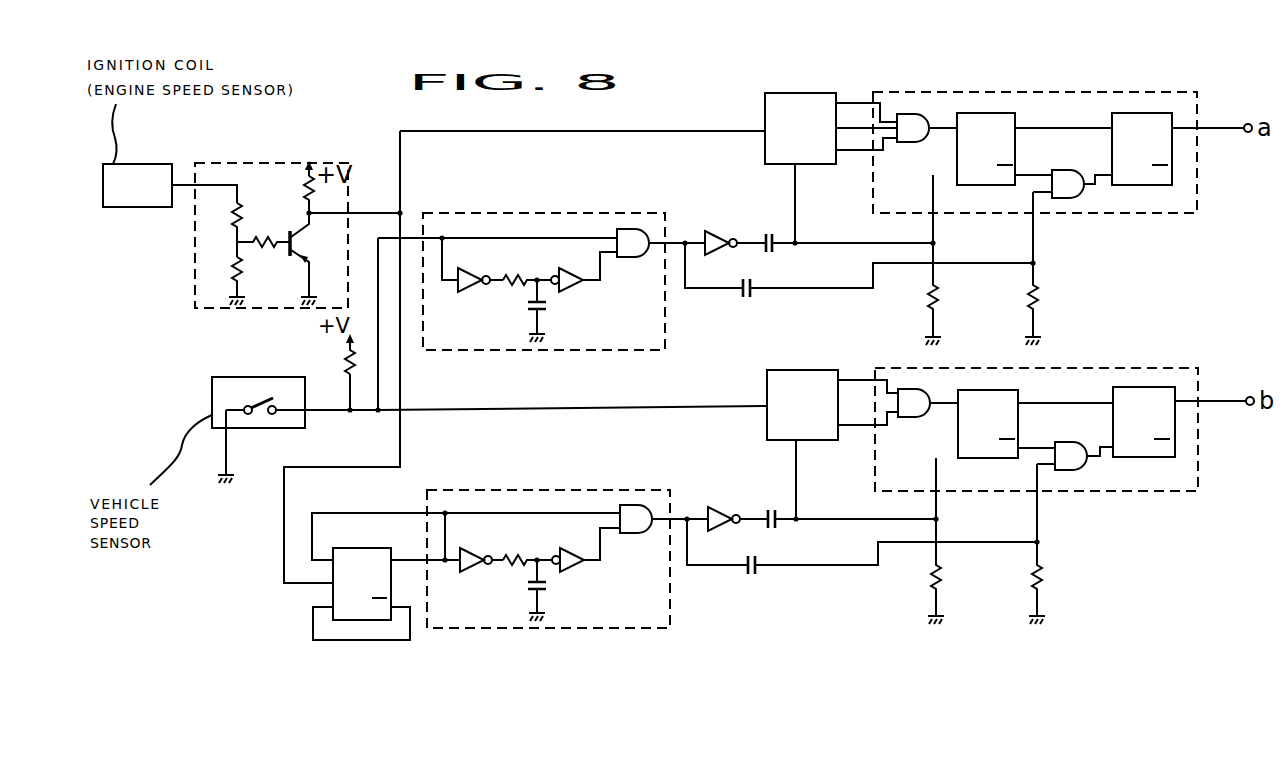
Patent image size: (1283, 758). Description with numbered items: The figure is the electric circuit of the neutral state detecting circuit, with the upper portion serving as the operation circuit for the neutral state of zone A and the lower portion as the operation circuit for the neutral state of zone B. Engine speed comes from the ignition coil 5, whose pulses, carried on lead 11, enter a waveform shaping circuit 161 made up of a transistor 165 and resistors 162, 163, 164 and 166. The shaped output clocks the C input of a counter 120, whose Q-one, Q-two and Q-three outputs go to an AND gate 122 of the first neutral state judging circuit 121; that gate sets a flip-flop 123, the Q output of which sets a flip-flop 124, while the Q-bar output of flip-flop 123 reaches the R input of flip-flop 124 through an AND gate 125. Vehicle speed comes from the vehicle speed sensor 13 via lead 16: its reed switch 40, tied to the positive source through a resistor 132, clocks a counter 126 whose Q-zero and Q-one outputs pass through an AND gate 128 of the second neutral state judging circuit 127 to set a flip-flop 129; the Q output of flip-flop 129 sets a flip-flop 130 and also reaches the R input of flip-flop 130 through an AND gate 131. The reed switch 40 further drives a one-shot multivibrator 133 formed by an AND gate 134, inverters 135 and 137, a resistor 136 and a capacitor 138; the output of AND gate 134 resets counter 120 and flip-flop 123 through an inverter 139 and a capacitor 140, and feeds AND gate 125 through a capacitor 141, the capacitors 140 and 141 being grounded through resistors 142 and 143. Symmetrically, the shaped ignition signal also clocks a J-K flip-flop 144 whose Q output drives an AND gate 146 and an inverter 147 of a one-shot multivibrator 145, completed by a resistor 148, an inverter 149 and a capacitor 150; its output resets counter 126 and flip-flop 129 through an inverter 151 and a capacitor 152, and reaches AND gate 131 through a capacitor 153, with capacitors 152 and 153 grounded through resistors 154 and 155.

The ignition coil 5 is at (145, 164).
The lead 11 is at (225, 188).
The vehicle speed sensor 13 is at (237, 357).
The lead 16 is at (318, 412).
The reed switch 40 is at (261, 433).
The counter 120 is at (816, 75).
The first neutral state judging circuit 121 is at (1001, 77).
The AND gate 122 is at (924, 143).
The flip-flop 123 is at (996, 112).
The flip-flop 124 is at (1121, 185).
The AND gate 125 is at (1083, 153).
The counter 126 is at (831, 355).
The second neutral state judging circuit 127 is at (1149, 353).
The AND gate 128 is at (925, 418).
The flip-flop 129 is at (1003, 390).
The flip-flop 130 is at (1122, 457).
The AND gate 131 is at (1081, 428).
The resistor 132 is at (341, 360).
The one-shot multivibrator 133 is at (626, 193).
The AND gate 134 is at (640, 259).
The inverter 135 is at (491, 260).
The resistor 136 is at (511, 287).
The inverter 137 is at (591, 261).
The capacitor 138 is at (552, 305).
The inverter 139 is at (742, 225).
The capacitor 140 is at (769, 253).
The capacitor 141 is at (748, 298).
The resistor 142 is at (939, 297).
The resistor 143 is at (1039, 297).
The J-K flip-flop 144 is at (389, 532).
The one-shot multivibrator 145 is at (629, 470).
The AND gate 146 is at (641, 535).
The inverter 147 is at (492, 539).
The resistor 148 is at (512, 567).
The inverter 149 is at (584, 539).
The capacitor 150 is at (549, 585).
The inverter 151 is at (740, 497).
The capacitor 152 is at (772, 529).
The capacitor 153 is at (751, 575).
The resistor 154 is at (942, 577).
The resistor 155 is at (1043, 577).
The waveform shaping circuit 161 is at (292, 141).
The resistor 162 is at (243, 217).
The resistor 163 is at (224, 271).
The resistor 164 is at (264, 250).
The transistor 165 is at (304, 249).
The resistor 166 is at (305, 187).